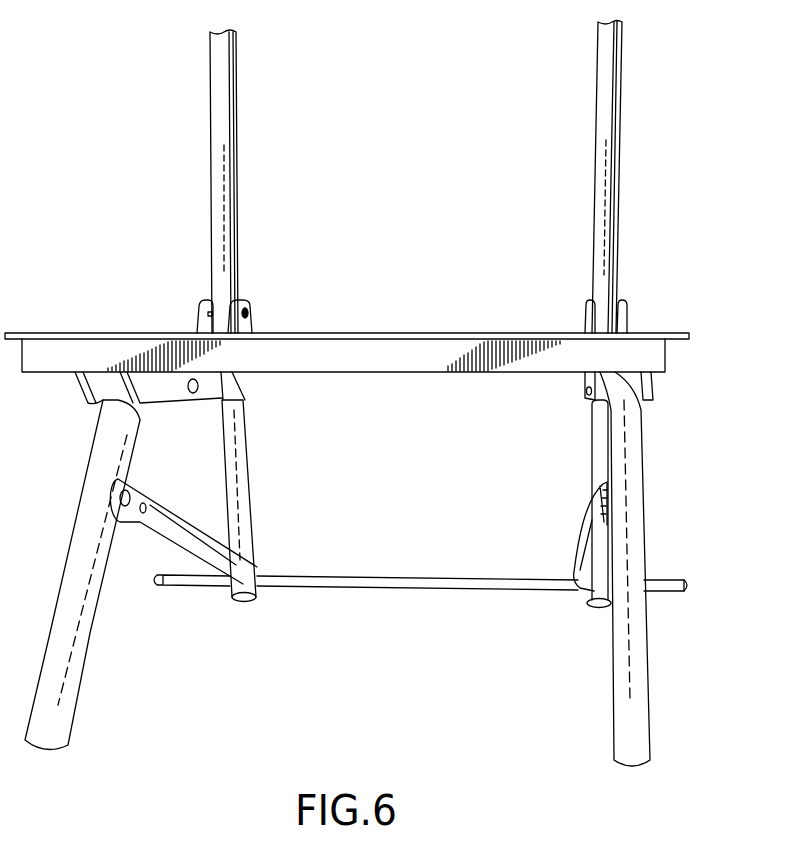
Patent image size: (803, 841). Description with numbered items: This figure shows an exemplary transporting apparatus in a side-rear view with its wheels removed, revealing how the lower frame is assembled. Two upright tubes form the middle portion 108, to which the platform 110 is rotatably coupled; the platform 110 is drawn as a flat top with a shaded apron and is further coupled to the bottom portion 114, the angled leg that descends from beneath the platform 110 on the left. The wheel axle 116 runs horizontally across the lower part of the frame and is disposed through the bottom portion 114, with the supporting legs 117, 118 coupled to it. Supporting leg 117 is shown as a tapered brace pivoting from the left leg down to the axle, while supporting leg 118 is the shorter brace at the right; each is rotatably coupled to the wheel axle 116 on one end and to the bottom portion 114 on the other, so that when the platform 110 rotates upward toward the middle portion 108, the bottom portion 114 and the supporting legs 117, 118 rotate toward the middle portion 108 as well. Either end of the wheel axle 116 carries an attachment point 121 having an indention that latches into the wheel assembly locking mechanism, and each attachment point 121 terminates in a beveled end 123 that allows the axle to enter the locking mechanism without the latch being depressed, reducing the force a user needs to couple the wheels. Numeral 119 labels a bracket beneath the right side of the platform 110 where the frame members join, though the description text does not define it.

The middle portion 108 is at (618, 210).
The platform 110 is at (482, 333).
The bottom portion 114 is at (90, 645).
The wheel axle 116 is at (478, 578).
The supporting leg 117 is at (200, 535).
The supporting leg 118 is at (583, 547).
The leg mounting bracket 119 is at (640, 390).
The attachment point 121 is at (675, 580).
The beveled end 123 is at (683, 591).